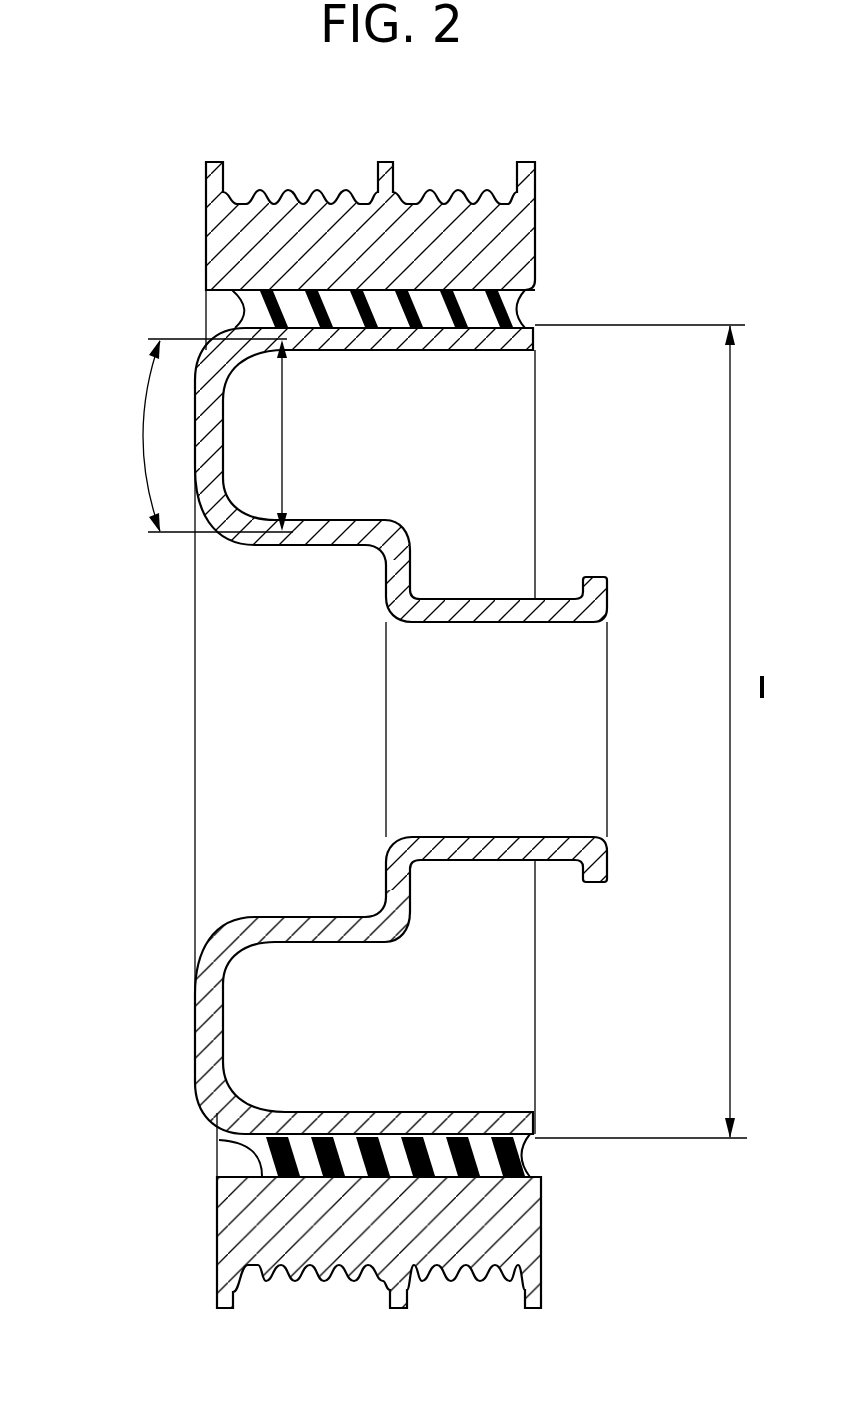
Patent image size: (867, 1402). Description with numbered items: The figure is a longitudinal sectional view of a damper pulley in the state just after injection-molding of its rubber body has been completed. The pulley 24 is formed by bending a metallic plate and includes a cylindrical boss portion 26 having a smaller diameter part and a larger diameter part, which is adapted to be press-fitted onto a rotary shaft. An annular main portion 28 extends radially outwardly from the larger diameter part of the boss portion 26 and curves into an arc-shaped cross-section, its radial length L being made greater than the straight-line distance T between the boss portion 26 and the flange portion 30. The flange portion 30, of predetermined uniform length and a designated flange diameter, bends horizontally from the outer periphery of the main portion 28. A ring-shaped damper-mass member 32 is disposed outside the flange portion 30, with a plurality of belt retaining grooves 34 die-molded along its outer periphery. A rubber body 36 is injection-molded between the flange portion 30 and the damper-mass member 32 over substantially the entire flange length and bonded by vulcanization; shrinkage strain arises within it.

The pulley 24 is at (224, 560).
The cylindrical boss portion 26 is at (500, 607).
The annular main portion 28 is at (207, 468).
The flange portion 30 is at (407, 340).
The damper-mass member 32 is at (420, 237).
The belt retaining grooves 34 is at (300, 187).
The rubber body 36 is at (482, 312).